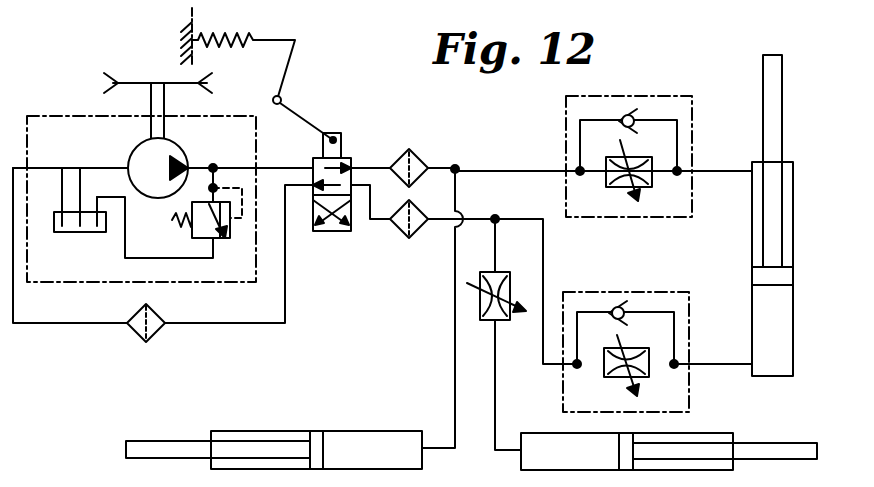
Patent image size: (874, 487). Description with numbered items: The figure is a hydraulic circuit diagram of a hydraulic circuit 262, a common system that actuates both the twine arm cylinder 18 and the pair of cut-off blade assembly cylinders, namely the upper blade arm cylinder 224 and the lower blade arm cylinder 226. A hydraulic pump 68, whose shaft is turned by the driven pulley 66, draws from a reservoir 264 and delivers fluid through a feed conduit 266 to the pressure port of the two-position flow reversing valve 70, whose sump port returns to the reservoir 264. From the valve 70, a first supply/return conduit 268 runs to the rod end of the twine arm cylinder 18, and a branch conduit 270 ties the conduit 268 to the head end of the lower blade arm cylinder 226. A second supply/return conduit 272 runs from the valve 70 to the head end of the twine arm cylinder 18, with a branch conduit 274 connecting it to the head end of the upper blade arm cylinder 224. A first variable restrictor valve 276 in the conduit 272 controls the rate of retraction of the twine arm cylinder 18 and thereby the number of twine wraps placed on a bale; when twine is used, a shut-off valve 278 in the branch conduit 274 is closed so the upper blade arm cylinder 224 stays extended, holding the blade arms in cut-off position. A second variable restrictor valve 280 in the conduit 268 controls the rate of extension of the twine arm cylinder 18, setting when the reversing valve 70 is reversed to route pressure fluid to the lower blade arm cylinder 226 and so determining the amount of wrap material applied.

The twine arm cylinder 18 is at (795, 196).
The driven pulley 66 is at (108, 74).
The hydraulic pump 68 is at (184, 148).
The flow reversing valve 70 is at (333, 231).
The upper blade arm cylinder 224 is at (722, 433).
The lower blade arm cylinder 226 is at (337, 431).
The hydraulic circuit 262 is at (132, 367).
The reservoir 264 is at (103, 232).
The feed conduit 266 is at (290, 152).
The first supply/return conduit 268 is at (512, 171).
The branch conduit 270 is at (455, 352).
The second supply/return conduit 272 is at (526, 219).
The branch conduit 274 is at (495, 403).
The first variable restrictor valve 276 is at (648, 345).
The shut-off valve 278 is at (510, 288).
The second variable restrictor valve 280 is at (612, 195).